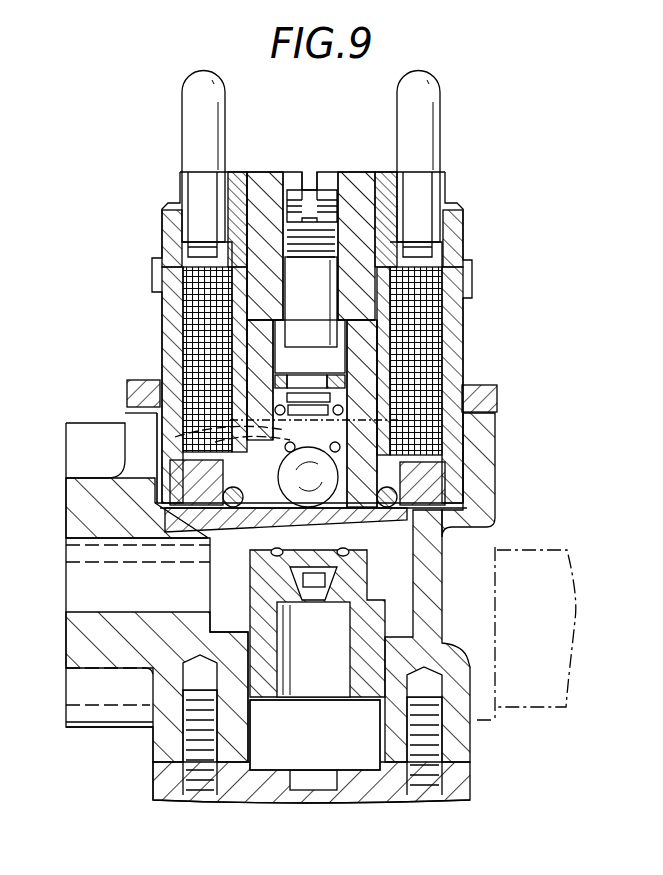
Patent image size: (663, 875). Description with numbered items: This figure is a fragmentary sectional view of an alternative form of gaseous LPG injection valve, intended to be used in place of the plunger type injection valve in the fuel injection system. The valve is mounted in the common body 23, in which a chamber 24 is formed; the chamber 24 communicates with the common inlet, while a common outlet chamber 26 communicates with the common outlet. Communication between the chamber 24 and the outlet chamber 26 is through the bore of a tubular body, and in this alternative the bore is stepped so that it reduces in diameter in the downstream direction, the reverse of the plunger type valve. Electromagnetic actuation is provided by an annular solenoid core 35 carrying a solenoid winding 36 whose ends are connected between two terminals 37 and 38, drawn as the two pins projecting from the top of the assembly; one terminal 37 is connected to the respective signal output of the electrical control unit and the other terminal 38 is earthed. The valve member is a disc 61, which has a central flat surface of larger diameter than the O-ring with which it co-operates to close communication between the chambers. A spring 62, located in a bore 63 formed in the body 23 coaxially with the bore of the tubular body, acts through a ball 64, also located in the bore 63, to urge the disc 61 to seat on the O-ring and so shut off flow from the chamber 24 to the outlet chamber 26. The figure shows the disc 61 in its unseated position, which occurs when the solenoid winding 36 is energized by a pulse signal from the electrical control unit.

The body 23 is at (480, 470).
The chamber 24 is at (402, 594).
The outlet chamber 26 is at (363, 728).
The annular solenoid core 35 is at (235, 312).
The solenoid winding 36 is at (215, 380).
The terminal 37 is at (200, 128).
The terminal 38 is at (420, 128).
The disc 61 is at (360, 526).
The spring 62 is at (178, 405).
The bore 63 is at (175, 437).
The ball 64 is at (268, 522).